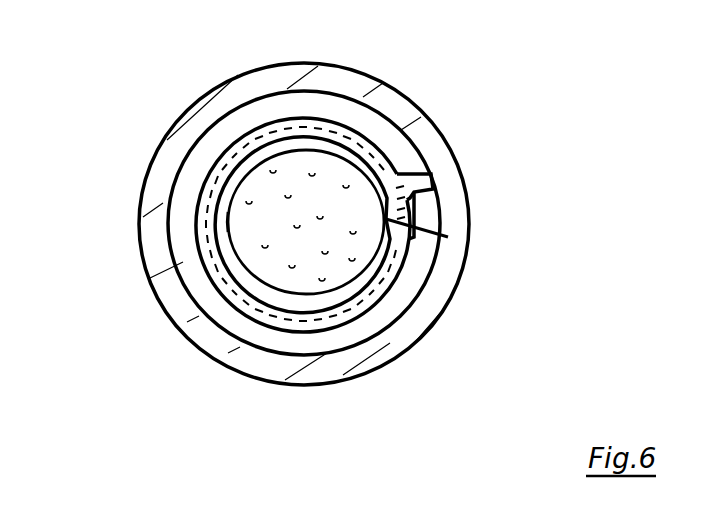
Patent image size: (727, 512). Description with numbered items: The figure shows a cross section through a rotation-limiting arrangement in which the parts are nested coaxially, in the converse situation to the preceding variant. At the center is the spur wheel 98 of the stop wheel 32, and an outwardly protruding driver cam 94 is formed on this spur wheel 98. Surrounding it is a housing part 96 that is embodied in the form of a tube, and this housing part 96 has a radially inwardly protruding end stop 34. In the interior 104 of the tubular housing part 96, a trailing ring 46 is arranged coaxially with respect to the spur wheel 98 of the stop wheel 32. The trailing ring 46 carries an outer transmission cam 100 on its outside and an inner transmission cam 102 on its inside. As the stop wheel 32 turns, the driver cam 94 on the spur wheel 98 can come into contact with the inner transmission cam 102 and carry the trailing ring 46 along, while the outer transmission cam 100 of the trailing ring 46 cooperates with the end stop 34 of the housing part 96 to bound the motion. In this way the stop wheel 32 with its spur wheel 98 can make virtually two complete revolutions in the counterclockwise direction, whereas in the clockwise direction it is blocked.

The housing part 96 is at (290, 72).
The interior 104 is at (198, 284).
The trailing ring 46 is at (366, 137).
The driver cam 94 is at (403, 167).
The outer transmission cam 100 is at (428, 177).
The end stop 34 is at (421, 219).
The inner transmission cam 102 is at (448, 237).
The stop wheel 32 is at (228, 232).
The spur wheel 98 is at (281, 271).